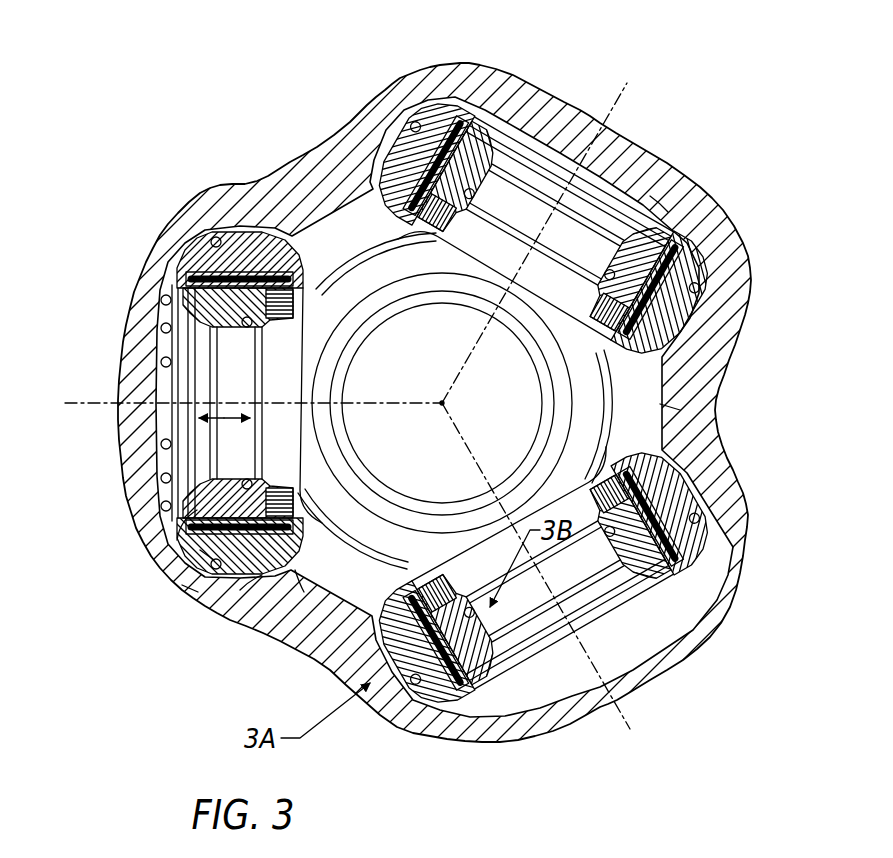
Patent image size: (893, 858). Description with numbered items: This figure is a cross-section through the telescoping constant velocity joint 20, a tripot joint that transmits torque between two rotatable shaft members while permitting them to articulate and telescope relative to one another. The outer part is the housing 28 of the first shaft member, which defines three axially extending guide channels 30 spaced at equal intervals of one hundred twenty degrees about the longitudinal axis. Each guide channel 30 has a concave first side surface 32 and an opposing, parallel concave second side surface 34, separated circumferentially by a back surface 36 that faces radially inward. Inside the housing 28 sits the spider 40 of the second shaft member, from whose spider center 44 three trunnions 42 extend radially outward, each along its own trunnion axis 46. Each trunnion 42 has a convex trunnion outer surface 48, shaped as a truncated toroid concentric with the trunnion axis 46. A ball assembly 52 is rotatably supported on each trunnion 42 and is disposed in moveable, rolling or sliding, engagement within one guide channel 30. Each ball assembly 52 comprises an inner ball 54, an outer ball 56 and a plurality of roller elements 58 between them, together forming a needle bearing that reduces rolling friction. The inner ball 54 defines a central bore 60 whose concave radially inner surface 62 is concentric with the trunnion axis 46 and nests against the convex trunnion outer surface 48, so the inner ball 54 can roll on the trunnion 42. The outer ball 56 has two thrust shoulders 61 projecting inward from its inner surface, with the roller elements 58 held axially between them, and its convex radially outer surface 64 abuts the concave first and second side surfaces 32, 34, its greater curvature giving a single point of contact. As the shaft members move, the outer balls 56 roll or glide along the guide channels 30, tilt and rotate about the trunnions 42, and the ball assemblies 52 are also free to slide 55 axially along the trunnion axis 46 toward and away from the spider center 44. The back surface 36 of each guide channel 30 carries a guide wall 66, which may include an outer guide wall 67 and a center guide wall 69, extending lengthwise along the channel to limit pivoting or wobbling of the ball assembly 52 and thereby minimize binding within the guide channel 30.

The telescoping constant velocity joint 20 is at (683, 160).
The housing 28 is at (702, 227).
The guide channel 30 is at (660, 200).
The first side surface 32 is at (217, 237).
The second side surface 34 is at (426, 110).
The back surface 36 is at (161, 320).
The spider 40 is at (360, 272).
The trunnion 42 is at (187, 340).
The spider center 44 is at (447, 400).
The trunnion axis 46 is at (602, 105).
The trunnion outer surface 48 is at (193, 505).
The ball assembly 52 is at (660, 383).
The inner ball 54 is at (693, 213).
The slide 55 is at (230, 425).
The outer ball 56 is at (687, 267).
The roller elements 58 is at (185, 278).
The central bore 60 is at (643, 220).
The thrust shoulder 61 is at (670, 407).
The radially inner surface 62 is at (250, 317).
The radially outer surface 64 is at (402, 203).
The guide wall 66 is at (67, 520).
The outer guide wall 67 is at (182, 283).
The center guide wall 69 is at (160, 360).